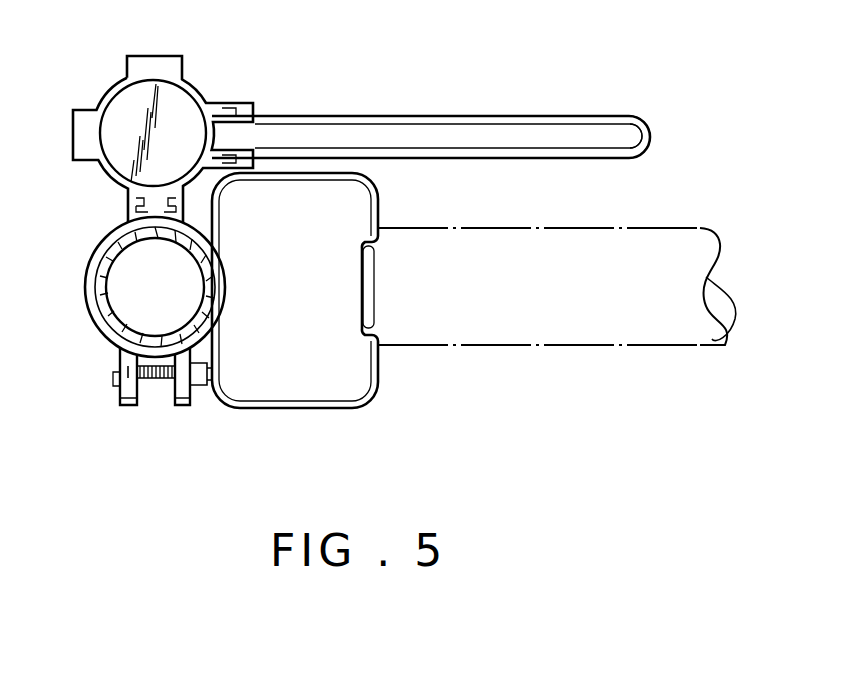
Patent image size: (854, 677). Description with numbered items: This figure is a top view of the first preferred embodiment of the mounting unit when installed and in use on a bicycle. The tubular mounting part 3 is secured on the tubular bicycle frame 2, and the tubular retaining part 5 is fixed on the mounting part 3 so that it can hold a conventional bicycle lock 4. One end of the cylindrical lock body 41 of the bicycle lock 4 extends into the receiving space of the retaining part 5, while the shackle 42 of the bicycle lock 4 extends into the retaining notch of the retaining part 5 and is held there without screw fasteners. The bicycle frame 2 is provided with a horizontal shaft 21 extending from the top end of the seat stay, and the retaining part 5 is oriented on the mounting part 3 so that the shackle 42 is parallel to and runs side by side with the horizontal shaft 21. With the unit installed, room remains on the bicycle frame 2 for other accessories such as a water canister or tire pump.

The tubular retaining part 5 is at (113, 88).
The cylindrical lock body 41 is at (125, 157).
The bicycle lock 4 is at (306, 114).
The shackle 42 is at (557, 127).
The tubular mounting part 3 is at (92, 320).
The tubular bicycle frame 2 is at (115, 342).
The horizontal shaft 21 is at (542, 338).